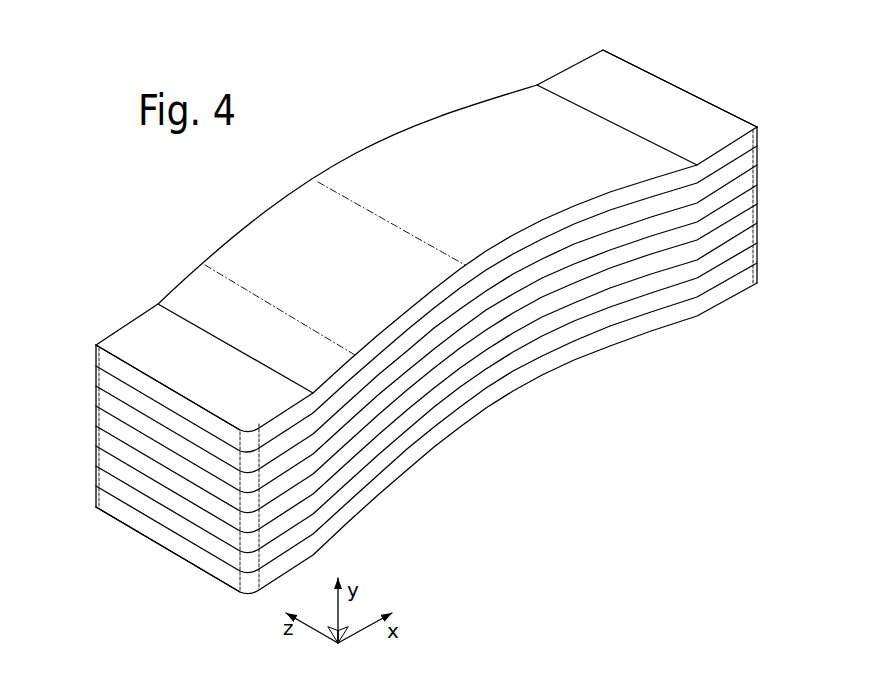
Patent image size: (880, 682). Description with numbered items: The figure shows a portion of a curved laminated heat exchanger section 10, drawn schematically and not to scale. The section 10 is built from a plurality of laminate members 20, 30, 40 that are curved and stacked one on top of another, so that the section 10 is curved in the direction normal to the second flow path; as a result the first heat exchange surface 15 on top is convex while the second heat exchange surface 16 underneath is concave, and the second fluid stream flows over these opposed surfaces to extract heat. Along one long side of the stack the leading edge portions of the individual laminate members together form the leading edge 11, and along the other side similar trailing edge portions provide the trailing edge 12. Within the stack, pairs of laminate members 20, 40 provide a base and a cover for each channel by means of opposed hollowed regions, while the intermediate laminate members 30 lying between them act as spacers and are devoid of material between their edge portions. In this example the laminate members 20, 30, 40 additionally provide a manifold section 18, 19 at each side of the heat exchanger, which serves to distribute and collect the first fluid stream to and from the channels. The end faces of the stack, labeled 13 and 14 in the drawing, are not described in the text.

The curved laminated heat exchanger section 10 is at (638, 43).
The leading edge 11 is at (606, 397).
The trailing edge 12 is at (363, 149).
The end face 13 is at (770, 217).
The end face 14 is at (117, 528).
The first heat exchange surface 15 is at (460, 155).
The second heat exchange surface 16 is at (460, 430).
The manifold section 18 is at (690, 107).
The manifold section 19 is at (167, 352).
The laminate member 20 is at (758, 195).
The intermediate laminate member 30 is at (758, 177).
The laminate member 40 is at (758, 137).